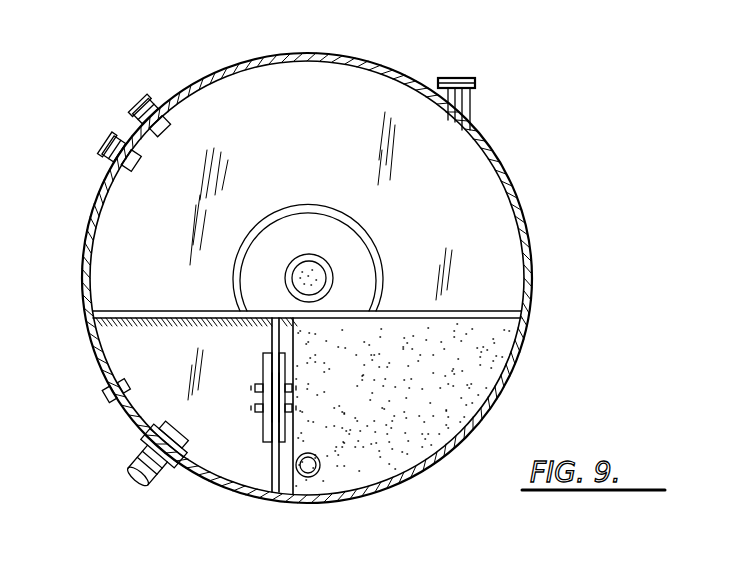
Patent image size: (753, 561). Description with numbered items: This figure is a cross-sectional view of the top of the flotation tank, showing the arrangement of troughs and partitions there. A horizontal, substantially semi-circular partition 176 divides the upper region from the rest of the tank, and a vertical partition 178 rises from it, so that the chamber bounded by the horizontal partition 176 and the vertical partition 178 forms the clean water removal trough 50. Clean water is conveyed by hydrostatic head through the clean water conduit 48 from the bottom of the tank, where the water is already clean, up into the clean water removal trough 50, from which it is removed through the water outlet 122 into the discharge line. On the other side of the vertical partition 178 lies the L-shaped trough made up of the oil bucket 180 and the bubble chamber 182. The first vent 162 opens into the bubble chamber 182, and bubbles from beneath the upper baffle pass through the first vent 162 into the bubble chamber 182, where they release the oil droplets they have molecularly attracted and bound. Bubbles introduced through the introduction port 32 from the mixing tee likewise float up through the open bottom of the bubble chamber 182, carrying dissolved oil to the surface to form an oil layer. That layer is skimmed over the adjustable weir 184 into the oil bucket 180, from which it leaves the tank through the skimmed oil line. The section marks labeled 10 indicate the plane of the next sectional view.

The horizontal semi-circular partition 176 is at (283, 100).
The introduction port 32 is at (478, 112).
The water outlet 122 is at (118, 148).
The clean water removal trough 50 is at (505, 213).
The vertical partition 178 is at (468, 311).
The clean water conduit 48 is at (313, 277).
The section line 10 is at (48, 297).
The oil bucket 180 is at (247, 447).
The adjustable weir 184 is at (290, 427).
The first vent 162 is at (320, 478).
The bubble chamber 182 is at (397, 445).